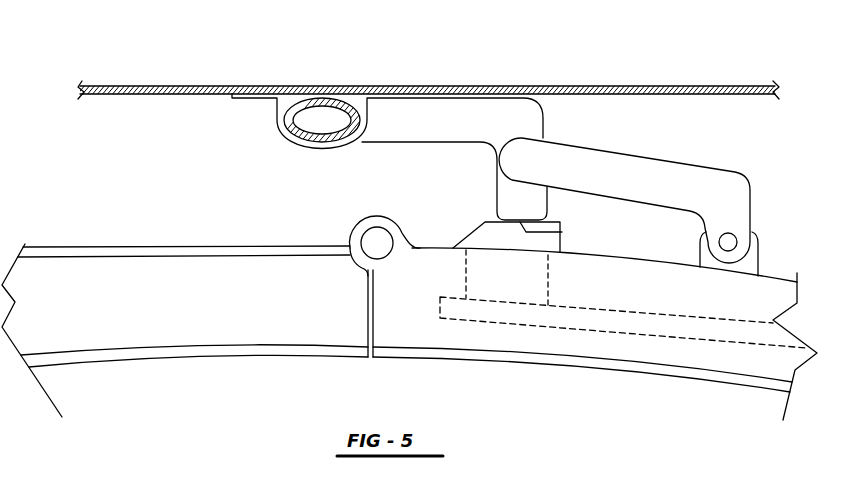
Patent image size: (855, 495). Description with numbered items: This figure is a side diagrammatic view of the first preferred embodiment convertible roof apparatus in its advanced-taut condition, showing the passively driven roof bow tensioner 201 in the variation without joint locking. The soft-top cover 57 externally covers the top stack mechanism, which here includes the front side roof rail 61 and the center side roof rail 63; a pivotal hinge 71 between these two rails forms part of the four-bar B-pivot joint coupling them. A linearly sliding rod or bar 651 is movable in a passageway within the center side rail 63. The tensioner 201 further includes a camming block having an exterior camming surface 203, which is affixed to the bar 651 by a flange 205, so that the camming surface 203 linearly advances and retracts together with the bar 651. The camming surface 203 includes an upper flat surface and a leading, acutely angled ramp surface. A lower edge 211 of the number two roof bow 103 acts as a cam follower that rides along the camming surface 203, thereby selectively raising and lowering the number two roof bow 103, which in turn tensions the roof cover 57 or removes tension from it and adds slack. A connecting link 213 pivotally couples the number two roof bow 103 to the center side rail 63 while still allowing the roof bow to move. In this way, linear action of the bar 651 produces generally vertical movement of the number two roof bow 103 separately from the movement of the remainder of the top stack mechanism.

The soft-top cover 57 is at (580, 86).
The number two roof bow 103 is at (318, 99).
The connecting link 213 is at (598, 158).
The roof bow tensioner 201 is at (752, 170).
The pivotal hinge 71 is at (377, 243).
The camming surface 203 is at (464, 235).
The lower edge 211 is at (562, 232).
The front side roof rail 61 is at (153, 307).
The center side roof rail 63 is at (745, 357).
The flange 205 is at (472, 362).
The bar 651 is at (628, 322).